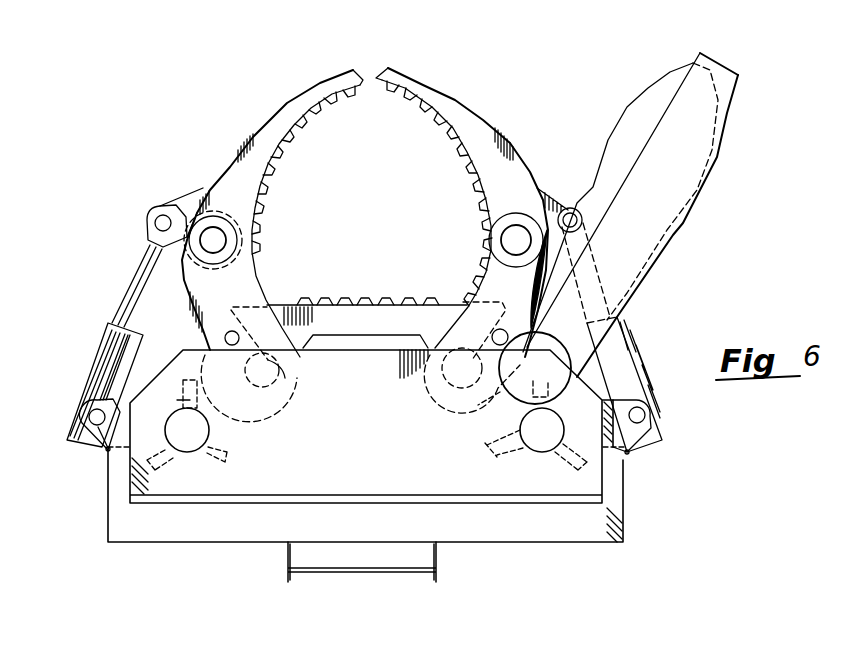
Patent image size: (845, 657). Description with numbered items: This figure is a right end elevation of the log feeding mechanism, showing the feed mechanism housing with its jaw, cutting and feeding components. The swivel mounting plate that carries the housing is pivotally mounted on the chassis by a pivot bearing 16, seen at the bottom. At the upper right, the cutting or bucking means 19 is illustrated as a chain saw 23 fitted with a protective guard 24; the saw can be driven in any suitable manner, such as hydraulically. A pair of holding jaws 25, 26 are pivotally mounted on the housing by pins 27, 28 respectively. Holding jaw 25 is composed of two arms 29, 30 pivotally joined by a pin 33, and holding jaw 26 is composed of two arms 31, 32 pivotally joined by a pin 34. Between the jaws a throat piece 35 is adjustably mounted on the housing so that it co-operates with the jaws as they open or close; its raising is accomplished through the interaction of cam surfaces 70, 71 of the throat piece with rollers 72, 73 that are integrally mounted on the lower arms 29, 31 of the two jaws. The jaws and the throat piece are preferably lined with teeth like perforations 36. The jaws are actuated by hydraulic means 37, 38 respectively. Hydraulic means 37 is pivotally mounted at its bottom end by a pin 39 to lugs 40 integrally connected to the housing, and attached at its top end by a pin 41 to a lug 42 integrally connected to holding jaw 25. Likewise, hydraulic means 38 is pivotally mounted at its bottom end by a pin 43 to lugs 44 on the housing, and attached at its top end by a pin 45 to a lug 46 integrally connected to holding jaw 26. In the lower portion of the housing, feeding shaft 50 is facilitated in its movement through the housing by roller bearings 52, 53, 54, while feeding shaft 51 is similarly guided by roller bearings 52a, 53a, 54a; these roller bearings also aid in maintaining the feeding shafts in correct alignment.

The pivot bearing 16 is at (368, 574).
The cutting or bucking means 19 is at (667, 44).
The chain saw 23 is at (630, 118).
The protective guard 24 is at (732, 90).
The holding jaw 25 is at (300, 96).
The holding jaw 26 is at (424, 85).
The pin 27 is at (290, 372).
The pin 28 is at (467, 388).
The arm 29 is at (193, 325).
The arm 30 is at (243, 140).
The arm 31 is at (548, 303).
The arm 32 is at (505, 140).
The pin 33 is at (222, 240).
The pin 34 is at (508, 240).
The throat piece 35 is at (390, 315).
The teeth like perforations 36 is at (277, 153).
The hydraulic means 37 is at (92, 372).
The hydraulic means 38 is at (628, 338).
The pin 39 is at (103, 446).
The lugs 40 is at (108, 451).
The pin 41 is at (155, 222).
The lug 42 is at (197, 196).
The pin 43 is at (646, 416).
The lugs 44 is at (627, 454).
The pin 45 is at (570, 212).
The lug 46 is at (542, 187).
The feeding shaft 50 is at (195, 452).
The feeding shaft 51 is at (531, 452).
The roller bearing 52 is at (155, 466).
The roller bearing 52a is at (488, 449).
The roller bearing 53 is at (170, 394).
The roller bearing 53a is at (538, 384).
The roller bearing 54 is at (234, 453).
The roller bearing 54a is at (566, 460).
The cam surface 70 is at (233, 308).
The cam surface 71 is at (503, 310).
The roller 72 is at (229, 335).
The roller 73 is at (493, 338).